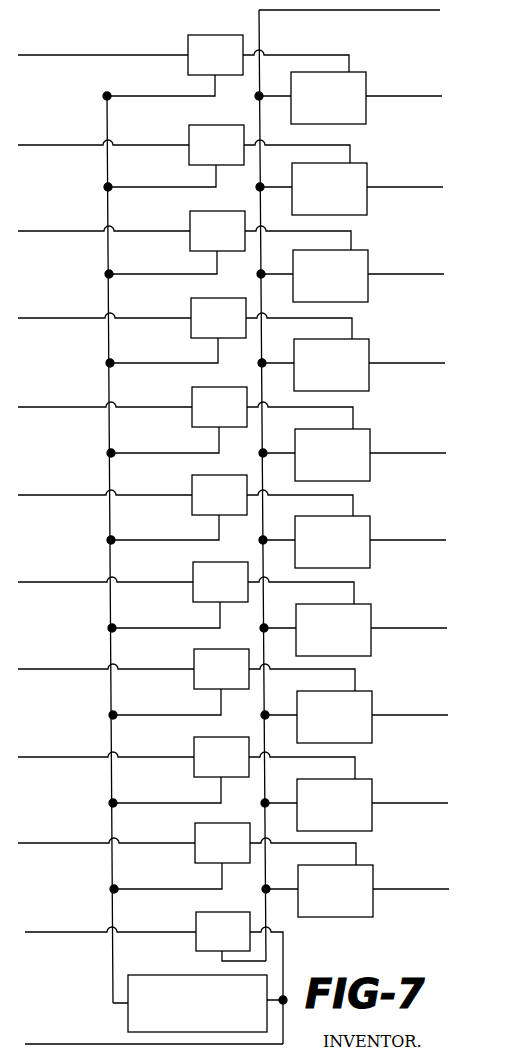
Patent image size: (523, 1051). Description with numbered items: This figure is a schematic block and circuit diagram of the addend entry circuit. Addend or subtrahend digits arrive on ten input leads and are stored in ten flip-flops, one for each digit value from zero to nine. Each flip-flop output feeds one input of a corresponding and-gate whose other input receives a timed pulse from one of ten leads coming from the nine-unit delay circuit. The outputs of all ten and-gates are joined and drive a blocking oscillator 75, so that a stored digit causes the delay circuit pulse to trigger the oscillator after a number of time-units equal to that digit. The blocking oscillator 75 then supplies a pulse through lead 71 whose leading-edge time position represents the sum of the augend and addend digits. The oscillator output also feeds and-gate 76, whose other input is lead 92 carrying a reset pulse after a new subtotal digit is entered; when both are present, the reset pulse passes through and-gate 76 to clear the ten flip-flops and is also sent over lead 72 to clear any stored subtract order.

The lead 72 is at (379, 12).
The lead 92 is at (63, 915).
The and-gate 76 is at (247, 895).
The blocking oscillator 75 is at (172, 958).
The lead 71 is at (66, 1025).